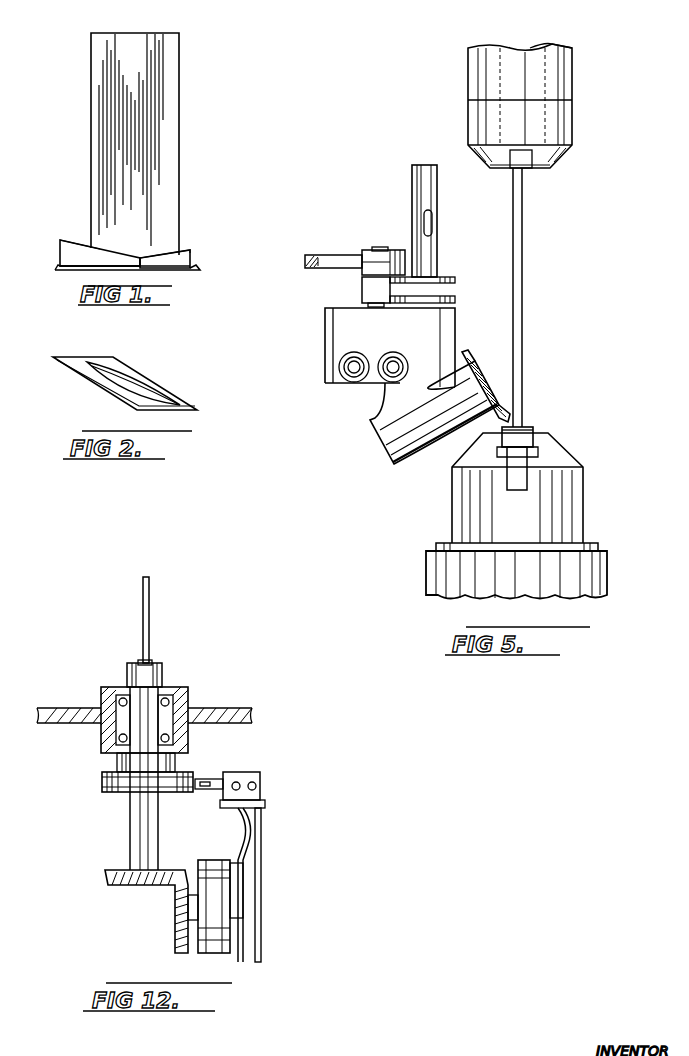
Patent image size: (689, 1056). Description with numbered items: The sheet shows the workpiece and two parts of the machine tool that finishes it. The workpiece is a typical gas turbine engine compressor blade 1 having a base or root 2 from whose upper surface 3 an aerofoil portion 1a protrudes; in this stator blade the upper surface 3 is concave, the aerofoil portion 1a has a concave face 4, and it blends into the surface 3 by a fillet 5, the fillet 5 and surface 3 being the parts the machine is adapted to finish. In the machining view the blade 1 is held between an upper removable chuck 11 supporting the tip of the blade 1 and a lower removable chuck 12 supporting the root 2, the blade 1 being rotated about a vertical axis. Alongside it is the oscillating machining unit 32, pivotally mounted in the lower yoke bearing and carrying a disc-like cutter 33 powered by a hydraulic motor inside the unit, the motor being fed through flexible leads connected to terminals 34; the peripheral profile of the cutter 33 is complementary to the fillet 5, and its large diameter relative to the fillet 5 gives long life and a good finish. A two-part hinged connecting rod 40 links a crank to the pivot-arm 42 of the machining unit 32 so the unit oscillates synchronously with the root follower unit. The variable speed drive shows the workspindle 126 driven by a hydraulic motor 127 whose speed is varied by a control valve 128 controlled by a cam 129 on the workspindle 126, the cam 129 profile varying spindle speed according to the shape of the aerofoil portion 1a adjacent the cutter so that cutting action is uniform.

In FIG. 1, the blade 1 is at (159, 144).
In FIG. 5, the blade 1 is at (527, 297).
In FIG. 12, the blade 1 is at (141, 620).
In FIG. 1, the aerofoil portion 1a is at (167, 163).
In FIG. 5, the aerofoil portion 1a is at (513, 247).
In FIG. 12, the aerofoil portion 1a is at (143, 600).
In FIG. 1, the root 2 is at (187, 262).
In FIG. 2, the root 2 is at (58, 357).
In FIG. 5, the root 2 is at (530, 440).
In FIG. 1, the upper surface 3 is at (152, 252).
In FIG. 2, the upper surface 3 is at (117, 373).
In FIG. 5, the upper surface 3 is at (525, 427).
In FIG. 2, the concave face 4 is at (142, 390).
In FIG. 1, the fillet 5 is at (126, 246).
In FIG. 5, the chuck 11 is at (572, 130).
In FIG. 5, the chuck 12 is at (583, 488).
In FIG. 5, the machining unit 32 is at (325, 340).
In FIG. 5, the disc-like cutter 33 is at (470, 348).
In FIG. 5, the terminals 34 is at (380, 380).
In FIG. 5, the rod 40 is at (320, 268).
In FIG. 5, the pivot-arm 42 is at (362, 289).
In FIG. 12, the workspindle 126 is at (140, 820).
In FIG. 12, the hydraulic motor 127 is at (210, 860).
In FIG. 12, the control valve 128 is at (232, 772).
In FIG. 12, the cam 129 is at (102, 782).